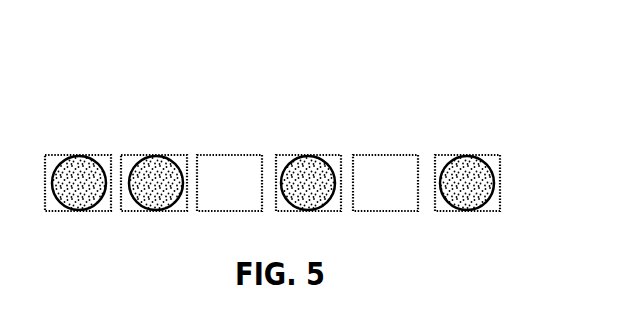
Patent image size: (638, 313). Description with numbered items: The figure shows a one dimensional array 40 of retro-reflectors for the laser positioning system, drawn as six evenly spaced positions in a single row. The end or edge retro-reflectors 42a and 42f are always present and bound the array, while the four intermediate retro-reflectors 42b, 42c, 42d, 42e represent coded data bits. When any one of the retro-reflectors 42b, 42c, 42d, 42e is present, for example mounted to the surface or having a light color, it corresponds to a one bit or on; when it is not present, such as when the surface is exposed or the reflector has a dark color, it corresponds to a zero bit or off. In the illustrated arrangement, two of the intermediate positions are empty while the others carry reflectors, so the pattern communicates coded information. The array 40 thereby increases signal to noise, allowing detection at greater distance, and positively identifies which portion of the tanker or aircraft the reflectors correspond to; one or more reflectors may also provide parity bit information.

The one dimensional (1D) array 40 is at (502, 53).
The retro-reflector 42a is at (79, 155).
The retro-reflector 42b is at (155, 155).
The retro-reflector 42c is at (230, 155).
The retro-reflector 42d is at (308, 155).
The retro-reflector 42e is at (385, 155).
The retro-reflector 42f is at (468, 155).